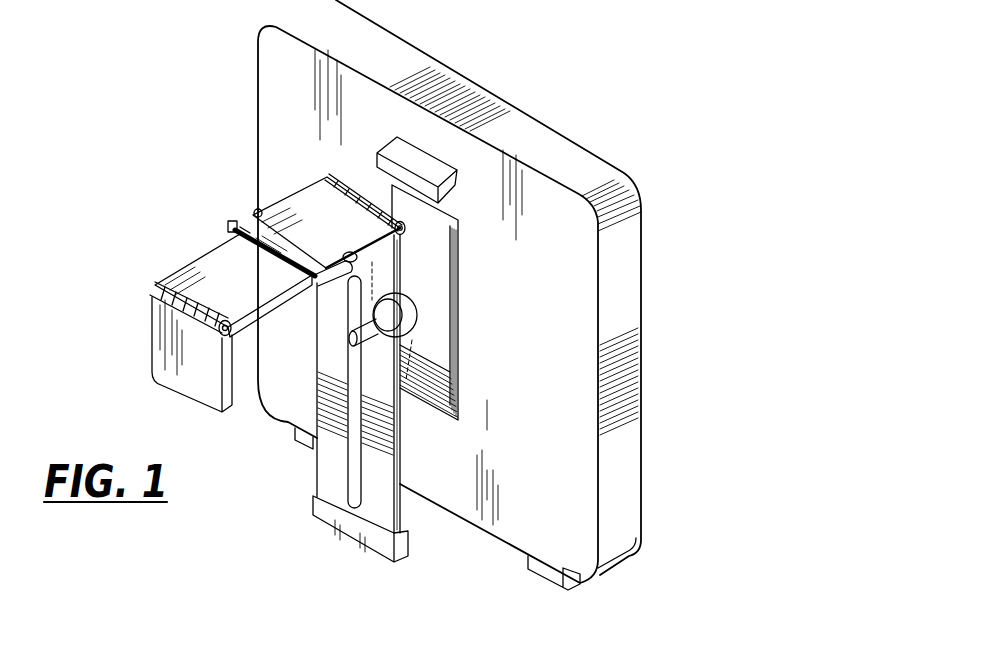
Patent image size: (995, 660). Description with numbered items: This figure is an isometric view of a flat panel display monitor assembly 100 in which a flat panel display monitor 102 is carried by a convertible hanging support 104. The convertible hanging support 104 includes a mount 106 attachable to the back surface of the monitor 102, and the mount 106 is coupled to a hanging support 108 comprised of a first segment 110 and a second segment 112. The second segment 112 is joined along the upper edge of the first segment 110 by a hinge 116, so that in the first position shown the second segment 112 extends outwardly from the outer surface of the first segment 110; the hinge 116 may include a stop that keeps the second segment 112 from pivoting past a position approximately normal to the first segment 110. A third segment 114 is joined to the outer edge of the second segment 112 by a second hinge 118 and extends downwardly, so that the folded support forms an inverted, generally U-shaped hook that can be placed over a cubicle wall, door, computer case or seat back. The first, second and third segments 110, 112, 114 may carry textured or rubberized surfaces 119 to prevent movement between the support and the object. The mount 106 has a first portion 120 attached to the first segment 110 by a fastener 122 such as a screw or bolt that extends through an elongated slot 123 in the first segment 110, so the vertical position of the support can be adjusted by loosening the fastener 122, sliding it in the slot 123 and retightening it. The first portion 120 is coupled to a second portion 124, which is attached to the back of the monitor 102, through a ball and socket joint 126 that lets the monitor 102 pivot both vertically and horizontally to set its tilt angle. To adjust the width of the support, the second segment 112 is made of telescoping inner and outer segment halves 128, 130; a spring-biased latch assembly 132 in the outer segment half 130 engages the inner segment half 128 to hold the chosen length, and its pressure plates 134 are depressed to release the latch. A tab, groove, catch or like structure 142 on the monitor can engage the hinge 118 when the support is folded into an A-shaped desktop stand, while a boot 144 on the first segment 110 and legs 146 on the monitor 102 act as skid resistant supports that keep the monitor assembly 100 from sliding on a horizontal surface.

The monitor assembly 100 is at (558, 66).
The flat panel display monitor 102 is at (627, 281).
The convertible hanging support 104 is at (235, 223).
The mount 106 is at (432, 293).
The hanging support 108 is at (324, 501).
The first segment 110 is at (401, 497).
The second segment 112 is at (193, 263).
The third segment 114 is at (178, 348).
The hinge 116 is at (328, 196).
The hinge 118 is at (150, 290).
The textured or rubberized surfaces 119 is at (320, 288).
The first portion 120 is at (433, 370).
The fastener 122 is at (356, 343).
The elongated slot 123 is at (347, 460).
The second portion 124 is at (418, 333).
The ball and socket joint 126 is at (437, 308).
The inner segment half 128 is at (228, 258).
The outer segment half 130 is at (322, 205).
The spring-biased latch assembly 132 is at (262, 210).
The pressure plates 134 is at (242, 225).
The tab, groove, catch or like structure 142 is at (428, 165).
The boot 144 is at (385, 548).
The legs 146 is at (550, 572).